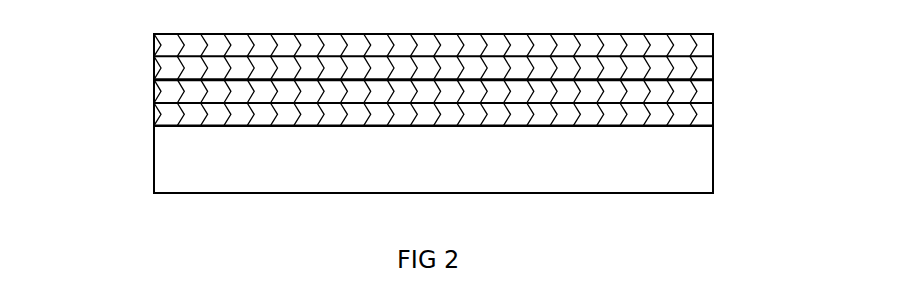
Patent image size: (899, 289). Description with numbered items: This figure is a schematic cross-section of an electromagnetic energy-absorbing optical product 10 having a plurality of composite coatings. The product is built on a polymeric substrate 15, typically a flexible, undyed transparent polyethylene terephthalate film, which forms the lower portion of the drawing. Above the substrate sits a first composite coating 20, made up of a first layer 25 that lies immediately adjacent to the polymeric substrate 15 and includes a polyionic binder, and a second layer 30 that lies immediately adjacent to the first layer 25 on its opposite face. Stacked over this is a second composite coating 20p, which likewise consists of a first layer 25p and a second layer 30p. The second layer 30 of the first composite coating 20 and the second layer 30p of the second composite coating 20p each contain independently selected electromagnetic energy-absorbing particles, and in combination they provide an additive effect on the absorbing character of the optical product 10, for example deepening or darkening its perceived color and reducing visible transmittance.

The electromagnetic energy-absorbing optical product 10 is at (428, 127).
The polymeric substrate 15 is at (716, 155).
The first composite coating 20 is at (420, 109).
The second composite coating 20p is at (418, 62).
The first layer 25 is at (153, 113).
The second layer 30 is at (153, 90).
The first layer 25p is at (153, 69).
The second layer 30p is at (153, 45).